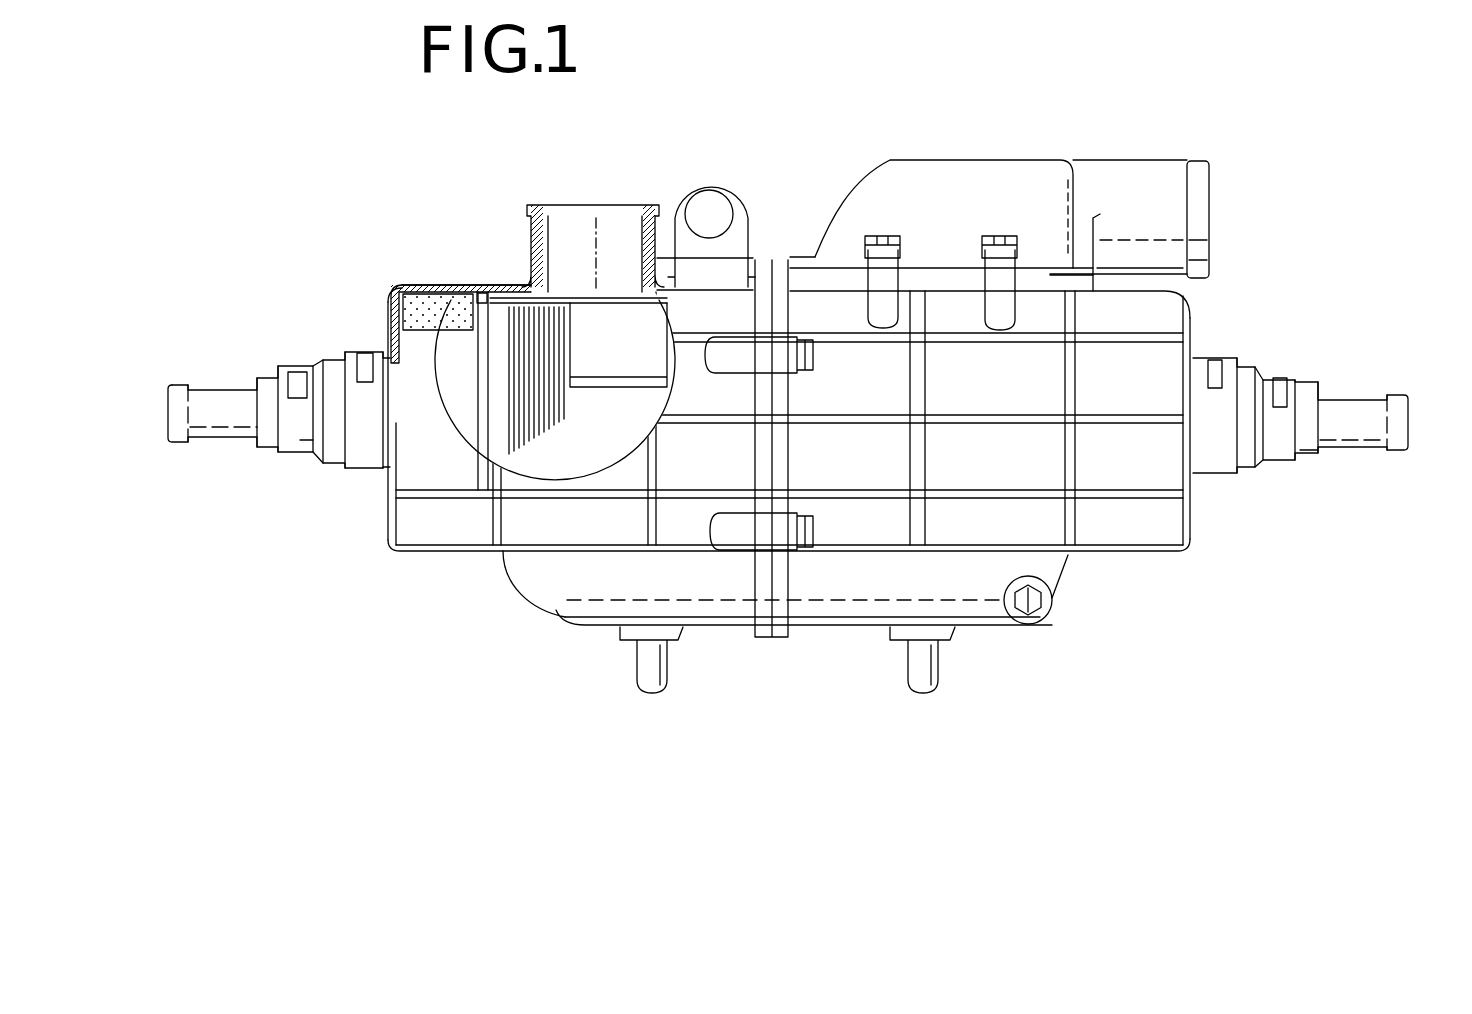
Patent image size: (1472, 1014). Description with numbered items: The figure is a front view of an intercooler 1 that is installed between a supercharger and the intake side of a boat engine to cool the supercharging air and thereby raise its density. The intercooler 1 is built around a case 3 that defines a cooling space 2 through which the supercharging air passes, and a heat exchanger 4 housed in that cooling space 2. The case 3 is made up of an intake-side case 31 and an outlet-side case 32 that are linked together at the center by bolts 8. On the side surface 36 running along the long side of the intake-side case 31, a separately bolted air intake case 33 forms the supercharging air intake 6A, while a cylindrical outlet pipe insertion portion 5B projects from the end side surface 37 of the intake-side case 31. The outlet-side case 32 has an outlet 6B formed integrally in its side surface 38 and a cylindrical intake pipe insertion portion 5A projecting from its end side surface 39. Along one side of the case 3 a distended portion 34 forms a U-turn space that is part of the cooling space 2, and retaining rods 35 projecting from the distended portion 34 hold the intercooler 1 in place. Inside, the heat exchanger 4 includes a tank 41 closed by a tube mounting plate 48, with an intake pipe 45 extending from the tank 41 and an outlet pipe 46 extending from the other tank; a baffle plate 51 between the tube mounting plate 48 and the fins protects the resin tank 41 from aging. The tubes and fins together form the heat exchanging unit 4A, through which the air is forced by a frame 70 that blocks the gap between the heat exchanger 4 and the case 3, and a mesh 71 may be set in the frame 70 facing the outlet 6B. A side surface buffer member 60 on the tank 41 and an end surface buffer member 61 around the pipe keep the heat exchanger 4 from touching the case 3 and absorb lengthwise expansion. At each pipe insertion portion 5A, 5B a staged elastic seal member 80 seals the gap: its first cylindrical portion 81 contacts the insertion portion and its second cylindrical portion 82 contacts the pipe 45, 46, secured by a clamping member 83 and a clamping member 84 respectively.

The intercooler 1 is at (800, 400).
The cooling space 2 is at (553, 453).
The case 3 is at (975, 593).
The heat exchanger 4 is at (508, 298).
The heat exchanging unit 4A is at (622, 447).
The intake pipe insertion portion 5A is at (309, 471).
The outlet pipe insertion portion 5B is at (1233, 496).
The supercharging air intake 6A is at (1230, 184).
The outlet 6B is at (525, 203).
The bolts 8 is at (817, 353).
The intake-side case 31 is at (1153, 307).
The outlet-side case 32 is at (563, 585).
The air intake case 33 is at (1172, 213).
The distended portion 34 is at (828, 597).
The retaining rods 35 is at (652, 683).
The side surface 36 is at (1050, 275).
The side surface 37 is at (1153, 345).
The side surface 38 is at (447, 283).
The side surface 39 is at (390, 513).
The tank 41 is at (430, 393).
The intake pipe 45 is at (220, 427).
The outlet pipe 46 is at (1353, 430).
The tube mounting plate 48 is at (483, 393).
The baffle plate 51 is at (483, 400).
The side surface buffer member 60 is at (432, 315).
The end surface buffer member 61 is at (478, 380).
The frame 70 is at (657, 255).
The mesh 71 is at (600, 290).
The seal member 80 is at (260, 402).
The first cylindrical portion 81 is at (330, 387).
The second cylindrical portion 82 is at (270, 443).
The clamping member 83 is at (360, 453).
The clamping member 84 is at (295, 410).